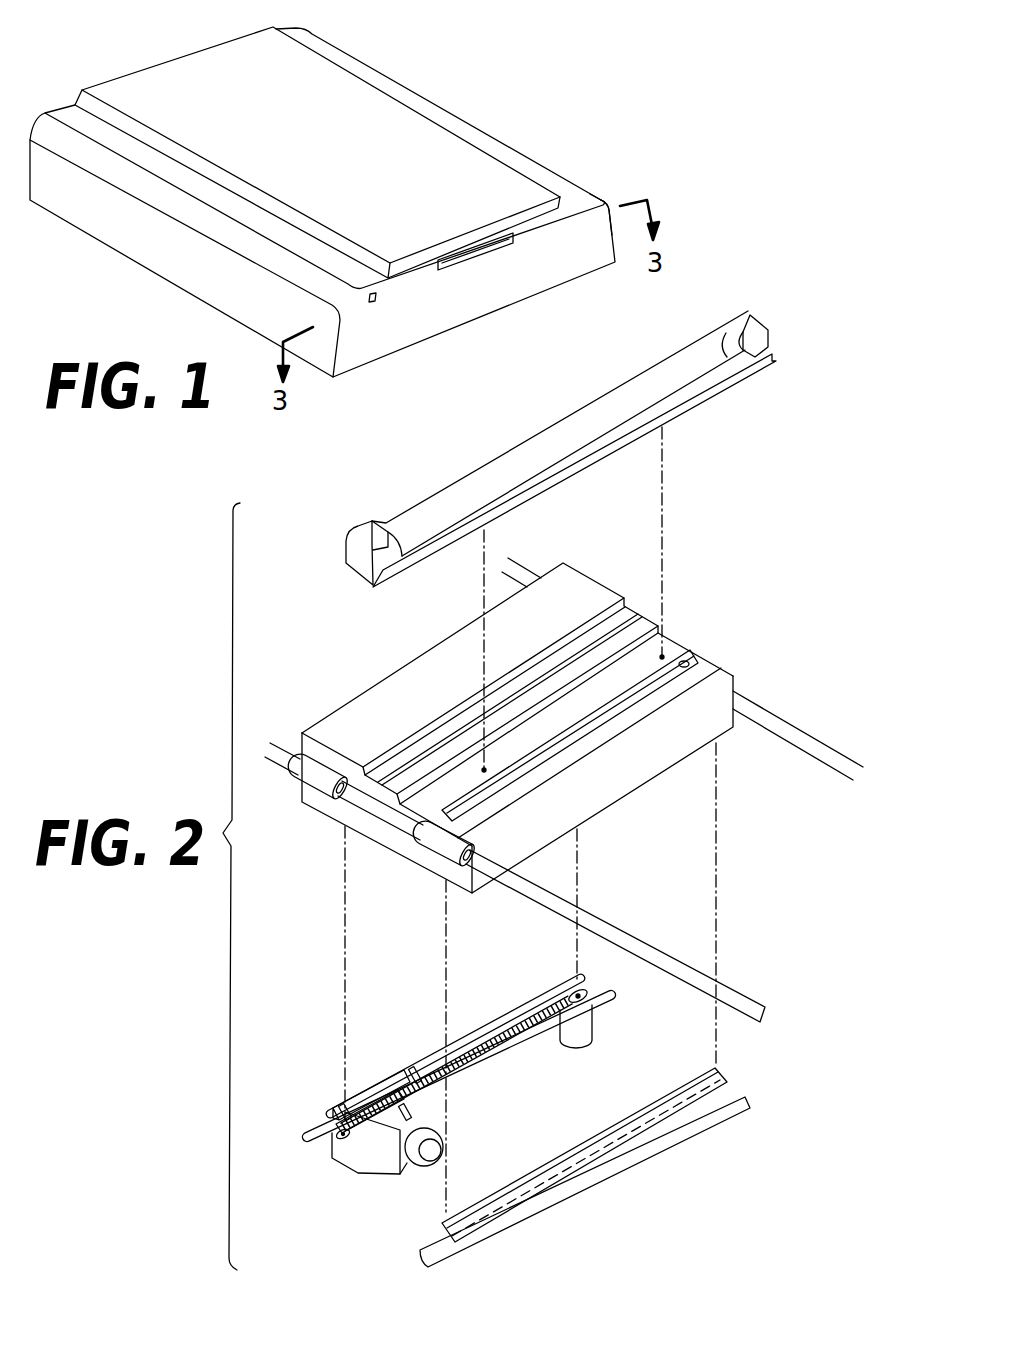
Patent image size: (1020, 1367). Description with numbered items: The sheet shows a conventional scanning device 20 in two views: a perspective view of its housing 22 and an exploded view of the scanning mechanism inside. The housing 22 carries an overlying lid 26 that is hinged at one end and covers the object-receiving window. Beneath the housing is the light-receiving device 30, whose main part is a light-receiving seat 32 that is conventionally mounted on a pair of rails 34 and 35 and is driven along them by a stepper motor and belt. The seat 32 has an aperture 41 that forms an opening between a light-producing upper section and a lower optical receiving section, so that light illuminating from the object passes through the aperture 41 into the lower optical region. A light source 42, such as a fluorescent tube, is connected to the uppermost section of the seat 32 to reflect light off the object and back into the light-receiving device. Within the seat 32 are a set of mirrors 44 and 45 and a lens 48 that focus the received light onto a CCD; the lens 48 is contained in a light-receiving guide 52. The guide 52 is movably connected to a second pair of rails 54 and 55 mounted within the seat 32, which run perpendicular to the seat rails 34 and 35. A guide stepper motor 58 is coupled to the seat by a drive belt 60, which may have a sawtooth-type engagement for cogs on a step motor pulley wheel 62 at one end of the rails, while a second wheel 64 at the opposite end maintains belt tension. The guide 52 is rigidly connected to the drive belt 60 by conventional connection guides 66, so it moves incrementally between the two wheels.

In FIG. 1, the scanning device 20 is at (548, 296).
In FIG. 1, the housing 22 is at (610, 206).
In FIG. 1, the lid 26 is at (262, 29).
In FIG. 2, the light-receiving device 30 is at (713, 661).
In FIG. 2, the light-receiving seat 32 is at (727, 732).
In FIG. 2, the rail 34 is at (808, 733).
In FIG. 2, the rail 35 is at (738, 992).
In FIG. 2, the aperture 41 is at (684, 663).
In FIG. 2, the light source 42 is at (588, 407).
In FIG. 2, the mirror 44 is at (724, 1082).
In FIG. 2, the mirror 45 is at (699, 1117).
In FIG. 2, the lens 48 is at (428, 1157).
In FIG. 2, the light-receiving guide 52 is at (378, 1082).
In FIG. 2, the rail 54 is at (580, 975).
In FIG. 2, the rail 55 is at (612, 995).
In FIG. 2, the guide stepper motor 58 is at (593, 1037).
In FIG. 2, the drive belt 60 is at (538, 1035).
In FIG. 2, the step motor pulley wheel 62 is at (583, 993).
In FIG. 2, the second wheel 64 is at (331, 1138).
In FIG. 2, the connection guides 66 is at (414, 1073).